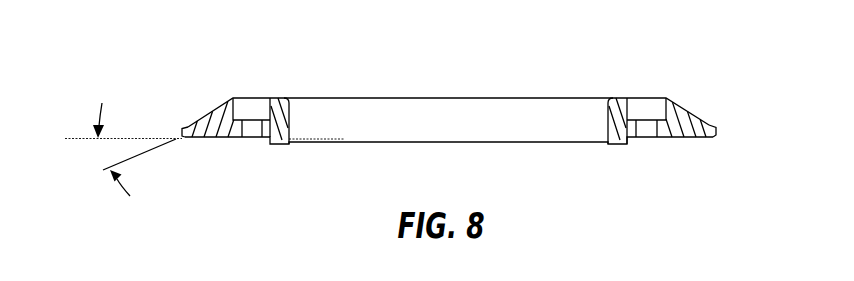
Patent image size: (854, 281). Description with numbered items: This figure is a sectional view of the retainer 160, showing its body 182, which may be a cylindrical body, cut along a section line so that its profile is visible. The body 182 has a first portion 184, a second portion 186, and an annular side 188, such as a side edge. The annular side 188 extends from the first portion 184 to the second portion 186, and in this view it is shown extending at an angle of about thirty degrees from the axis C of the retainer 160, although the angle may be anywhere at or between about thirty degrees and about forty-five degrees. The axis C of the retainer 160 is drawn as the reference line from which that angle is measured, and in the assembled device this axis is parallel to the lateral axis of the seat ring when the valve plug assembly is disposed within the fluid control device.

The retainer 160 is at (704, 64).
The body 182 is at (623, 84).
The first portion 184 is at (272, 99).
The second portion 186 is at (178, 132).
The annular side 188 is at (222, 113).